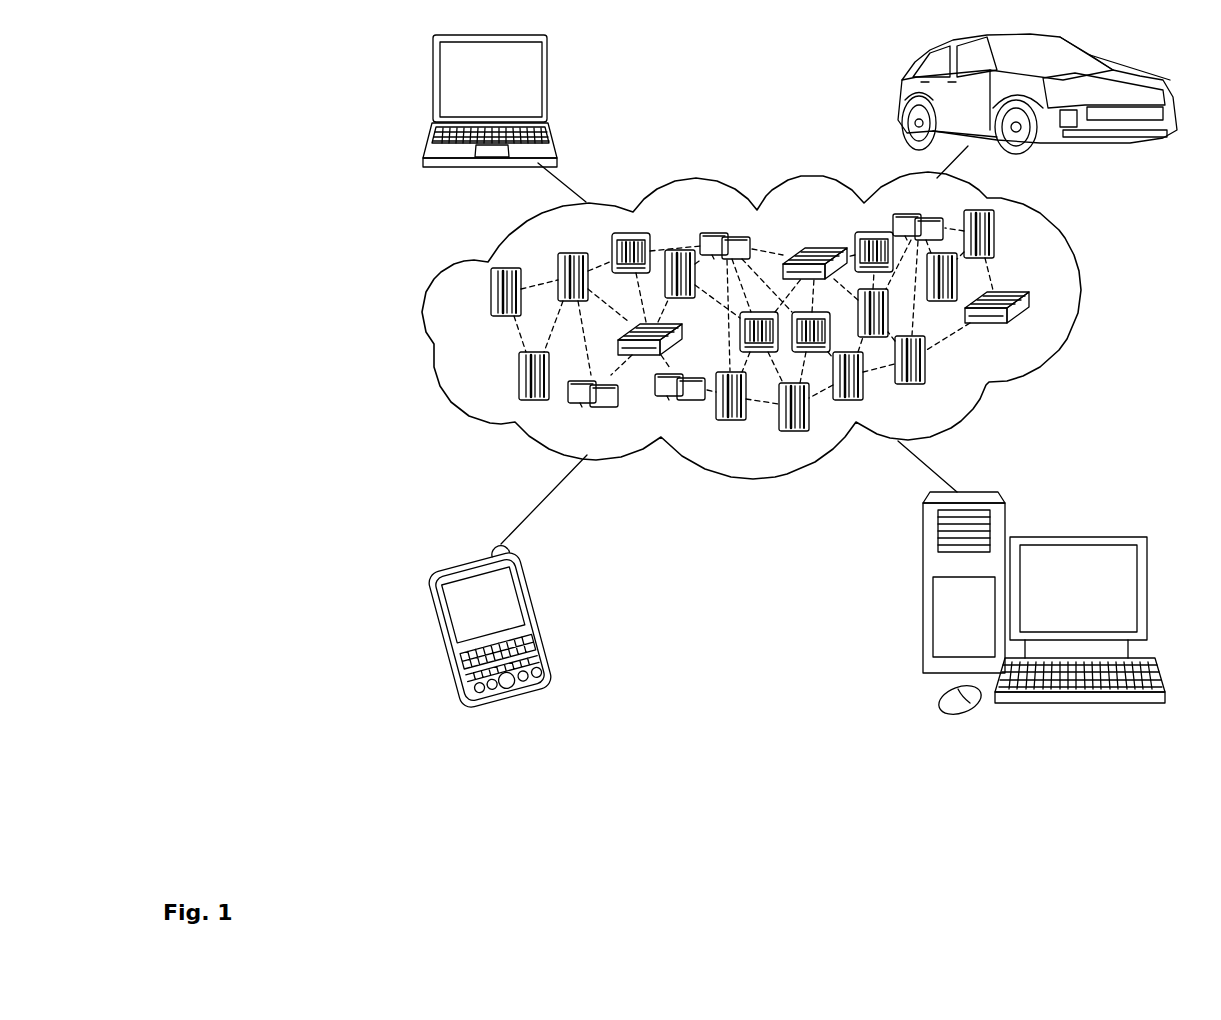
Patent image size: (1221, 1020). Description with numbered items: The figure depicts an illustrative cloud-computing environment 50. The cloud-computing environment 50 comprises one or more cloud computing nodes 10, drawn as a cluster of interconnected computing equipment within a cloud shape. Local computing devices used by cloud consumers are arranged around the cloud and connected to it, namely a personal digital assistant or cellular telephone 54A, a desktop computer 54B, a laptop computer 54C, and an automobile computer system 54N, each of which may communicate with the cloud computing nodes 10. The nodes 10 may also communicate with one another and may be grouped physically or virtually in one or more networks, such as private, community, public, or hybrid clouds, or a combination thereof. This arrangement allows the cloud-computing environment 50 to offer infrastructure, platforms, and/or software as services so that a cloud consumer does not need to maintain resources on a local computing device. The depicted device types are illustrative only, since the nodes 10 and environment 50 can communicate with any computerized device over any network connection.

The cloud computing nodes 10 is at (1034, 331).
The cloud-computing environment 50 is at (1075, 302).
The personal digital assistant or cellular telephone 54A is at (540, 611).
The desktop computer 54B is at (1077, 537).
The laptop computer 54C is at (547, 78).
The automobile computer system 54N is at (898, 98).